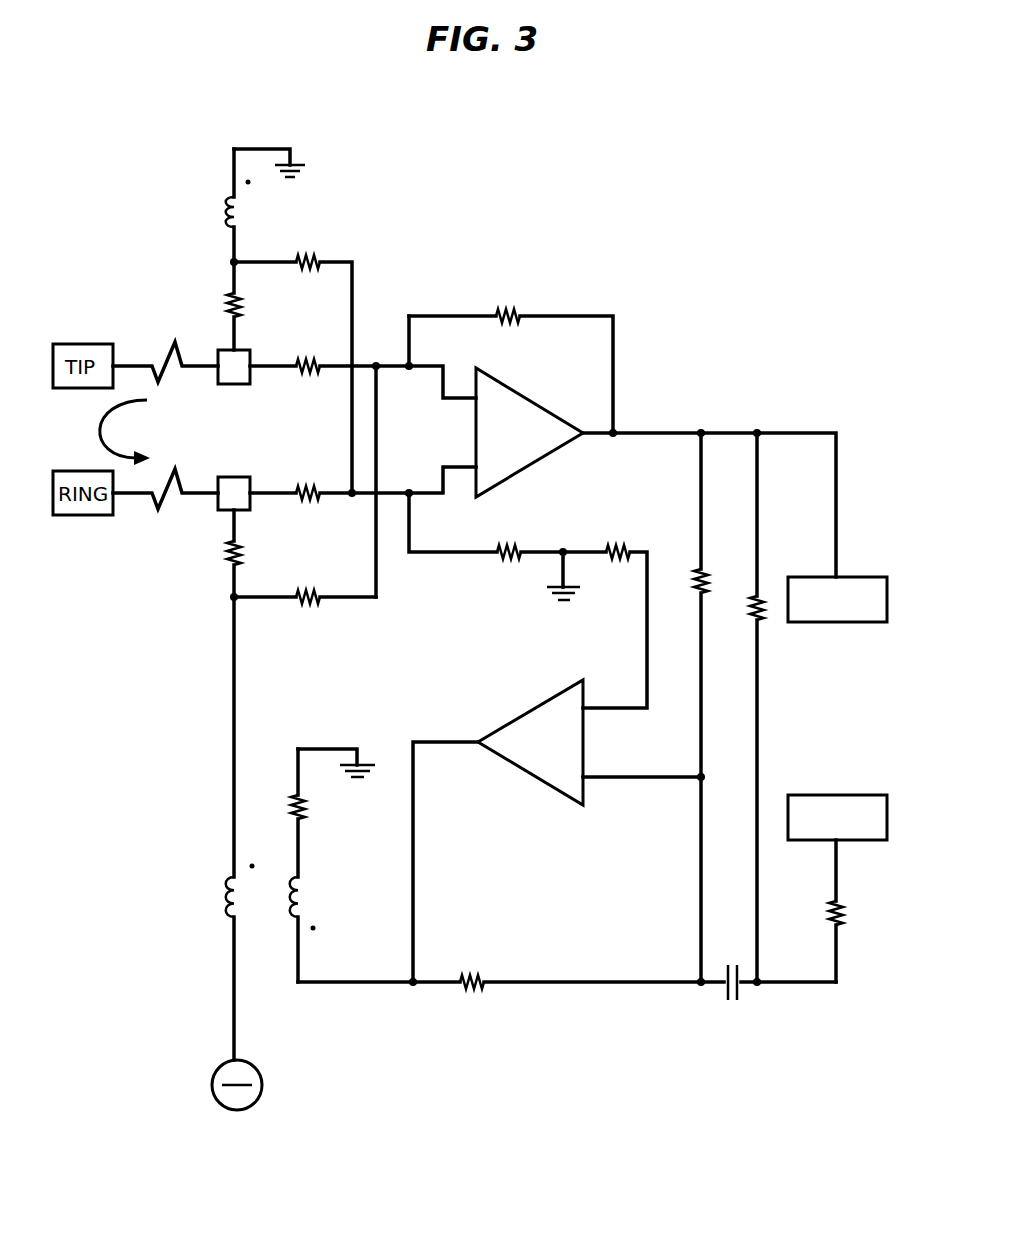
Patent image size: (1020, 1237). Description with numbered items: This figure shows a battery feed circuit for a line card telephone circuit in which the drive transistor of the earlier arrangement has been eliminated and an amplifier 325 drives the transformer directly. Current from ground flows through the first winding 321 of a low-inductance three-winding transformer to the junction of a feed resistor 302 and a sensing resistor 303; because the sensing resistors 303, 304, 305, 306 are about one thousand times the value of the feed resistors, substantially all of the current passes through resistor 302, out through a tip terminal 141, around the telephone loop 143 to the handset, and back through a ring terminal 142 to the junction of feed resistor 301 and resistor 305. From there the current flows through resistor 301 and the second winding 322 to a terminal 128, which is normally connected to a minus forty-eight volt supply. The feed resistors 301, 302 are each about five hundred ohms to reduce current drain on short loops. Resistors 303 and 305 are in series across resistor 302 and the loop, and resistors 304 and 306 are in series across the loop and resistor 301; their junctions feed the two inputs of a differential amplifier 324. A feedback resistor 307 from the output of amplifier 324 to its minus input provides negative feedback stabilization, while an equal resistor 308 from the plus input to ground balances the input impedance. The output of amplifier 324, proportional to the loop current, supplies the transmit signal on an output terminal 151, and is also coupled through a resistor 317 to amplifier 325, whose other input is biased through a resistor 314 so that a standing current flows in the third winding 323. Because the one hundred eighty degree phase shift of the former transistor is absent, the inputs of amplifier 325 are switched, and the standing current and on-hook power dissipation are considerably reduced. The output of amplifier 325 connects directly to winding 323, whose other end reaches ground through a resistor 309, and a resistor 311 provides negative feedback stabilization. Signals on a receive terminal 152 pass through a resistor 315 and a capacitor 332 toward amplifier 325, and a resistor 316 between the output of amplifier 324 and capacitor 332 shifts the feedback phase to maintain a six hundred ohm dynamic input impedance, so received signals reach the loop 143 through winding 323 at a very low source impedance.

The terminal 128 is at (212, 1088).
The terminal 141 is at (240, 385).
The terminal 142 is at (240, 478).
The telephone loop 143 is at (100, 428).
The output terminal 151 is at (836, 624).
The receive terminal 152 is at (840, 794).
The resistor 301 is at (226, 553).
The resistor 302 is at (226, 303).
The resistor 303 is at (306, 257).
The resistor 304 is at (306, 359).
The resistor 305 is at (313, 500).
The resistor 306 is at (315, 605).
The resistor 307 is at (506, 309).
The resistor 308 is at (506, 563).
The resistor 309 is at (305, 800).
The resistor 311 is at (471, 975).
The resistor 314 is at (617, 563).
The resistor 315 is at (846, 908).
The resistor 316 is at (753, 598).
The resistor 317 is at (697, 570).
The winding 321 is at (224, 213).
The winding 322 is at (222, 900).
The winding 323 is at (312, 893).
The differential amplifier 324 is at (531, 400).
The amplifier 325 is at (531, 712).
The capacitor 332 is at (741, 993).